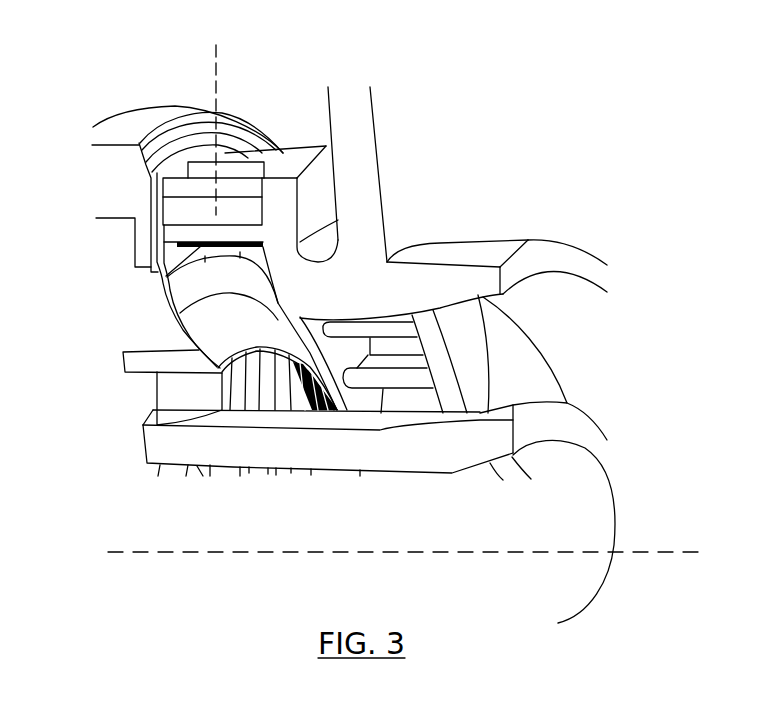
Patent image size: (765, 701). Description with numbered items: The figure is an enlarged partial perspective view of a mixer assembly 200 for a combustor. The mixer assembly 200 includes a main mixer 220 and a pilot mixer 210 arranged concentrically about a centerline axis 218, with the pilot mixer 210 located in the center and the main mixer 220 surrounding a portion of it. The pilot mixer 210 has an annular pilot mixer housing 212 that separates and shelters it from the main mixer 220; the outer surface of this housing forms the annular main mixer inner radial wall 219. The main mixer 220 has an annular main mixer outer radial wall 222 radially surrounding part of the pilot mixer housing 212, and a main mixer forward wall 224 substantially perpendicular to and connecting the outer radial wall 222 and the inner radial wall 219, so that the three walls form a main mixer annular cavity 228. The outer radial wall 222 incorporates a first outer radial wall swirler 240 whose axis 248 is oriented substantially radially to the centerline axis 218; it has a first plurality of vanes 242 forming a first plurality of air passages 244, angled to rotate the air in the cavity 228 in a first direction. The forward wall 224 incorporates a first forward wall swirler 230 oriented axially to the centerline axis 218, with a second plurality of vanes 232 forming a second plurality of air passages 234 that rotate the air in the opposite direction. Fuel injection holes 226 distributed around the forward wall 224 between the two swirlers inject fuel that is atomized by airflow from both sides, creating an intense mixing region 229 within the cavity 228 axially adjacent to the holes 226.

The mixer assembly 200 is at (506, 48).
The pilot mixer 210 is at (585, 493).
The annular pilot mixer housing 212 is at (437, 452).
The centerline axis 218 is at (660, 552).
The annular main mixer inner radial wall 219 is at (330, 418).
The main mixer 220 is at (567, 353).
The annular main mixer outer radial wall 222 is at (562, 260).
The main mixer forward wall 224 is at (157, 327).
The fuel injection holes 226 is at (157, 282).
The main mixer annular cavity 228 is at (526, 377).
The intense mixing region 229 is at (250, 333).
The first forward wall swirler 230 is at (133, 407).
The second plurality of vanes 232 is at (172, 398).
The second plurality of air passages 234 is at (232, 400).
The first outer radial wall swirler 240 is at (278, 136).
The first plurality of vanes 242 is at (157, 210).
The first plurality of air passages 244 is at (401, 400).
The axis 248 is at (218, 68).